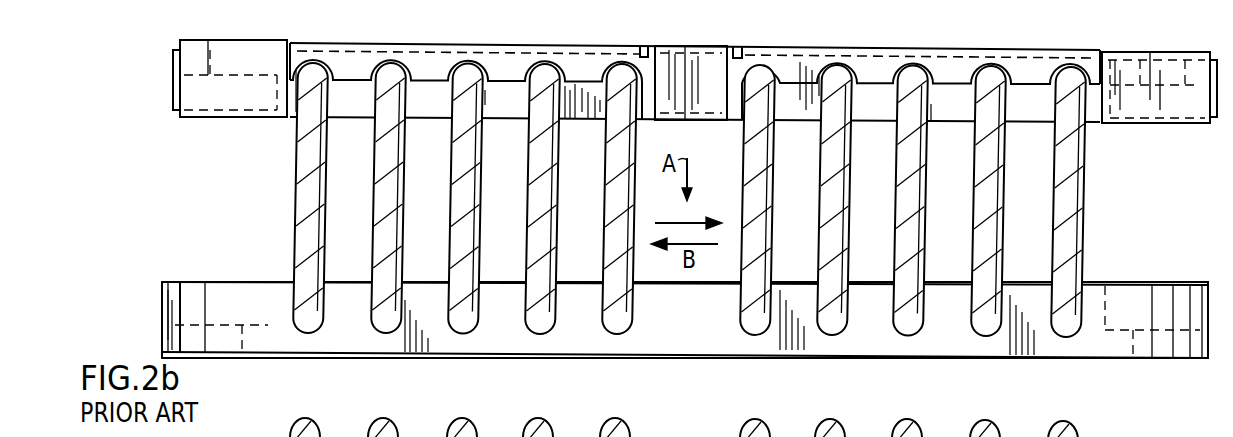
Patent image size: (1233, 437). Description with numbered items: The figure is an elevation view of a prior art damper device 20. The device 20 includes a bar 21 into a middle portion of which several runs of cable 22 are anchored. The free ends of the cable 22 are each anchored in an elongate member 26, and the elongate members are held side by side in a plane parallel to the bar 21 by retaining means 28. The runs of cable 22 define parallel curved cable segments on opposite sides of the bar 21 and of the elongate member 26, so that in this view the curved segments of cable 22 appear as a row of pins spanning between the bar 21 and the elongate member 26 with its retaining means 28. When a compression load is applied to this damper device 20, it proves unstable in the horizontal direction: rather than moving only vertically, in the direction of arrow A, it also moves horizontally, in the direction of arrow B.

The damper device 20 is at (640, 368).
The bar 21 is at (716, 338).
The cable 22 is at (310, 237).
The elongate member 26 is at (508, 110).
The retaining means 28 is at (893, 34).